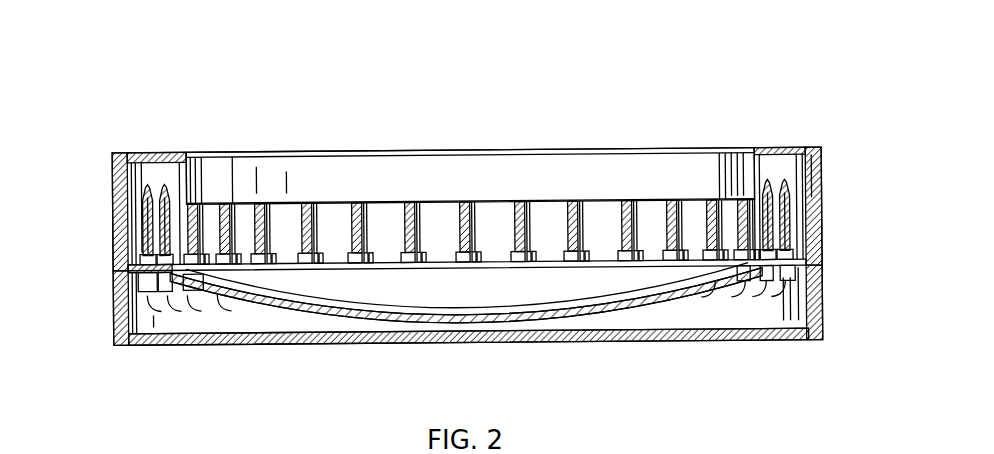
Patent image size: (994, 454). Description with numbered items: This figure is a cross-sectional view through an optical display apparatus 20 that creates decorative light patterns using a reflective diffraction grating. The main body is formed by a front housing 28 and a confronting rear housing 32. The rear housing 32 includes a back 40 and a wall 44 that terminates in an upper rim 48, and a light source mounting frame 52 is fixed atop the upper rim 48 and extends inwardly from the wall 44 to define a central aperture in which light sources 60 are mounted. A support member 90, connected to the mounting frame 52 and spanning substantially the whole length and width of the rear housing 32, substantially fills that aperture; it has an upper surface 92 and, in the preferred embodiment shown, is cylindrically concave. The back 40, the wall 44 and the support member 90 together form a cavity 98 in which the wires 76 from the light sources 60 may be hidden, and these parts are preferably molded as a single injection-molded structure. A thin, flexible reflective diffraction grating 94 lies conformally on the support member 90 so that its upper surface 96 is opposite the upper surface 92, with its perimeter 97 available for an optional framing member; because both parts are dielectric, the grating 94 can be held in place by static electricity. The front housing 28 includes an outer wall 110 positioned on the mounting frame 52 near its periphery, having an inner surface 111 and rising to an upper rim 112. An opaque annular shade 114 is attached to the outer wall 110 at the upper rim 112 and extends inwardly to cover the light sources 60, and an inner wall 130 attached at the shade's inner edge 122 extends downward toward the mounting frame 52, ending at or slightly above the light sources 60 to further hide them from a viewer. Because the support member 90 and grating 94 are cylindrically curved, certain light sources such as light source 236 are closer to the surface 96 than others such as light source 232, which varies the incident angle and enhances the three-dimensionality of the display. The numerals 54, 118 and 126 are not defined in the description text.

The optical display apparatus 20 is at (473, 78).
The front housing 28 is at (108, 178).
The rear housing 32 is at (108, 323).
The back 40 is at (678, 343).
The wall 44 is at (822, 324).
The upper rim 48 is at (815, 262).
The light source mounting frame 52 is at (128, 266).
The contact tail 54 is at (199, 295).
The light sources 60 is at (795, 212).
The wires 76 is at (167, 300).
The support member 90 is at (273, 304).
The upper surface 92 is at (333, 295).
The reflective diffraction grating 94 is at (405, 313).
The upper surface 96 is at (470, 306).
The perimeter 97 is at (745, 275).
The cavity 98 is at (618, 320).
The outer wall 110 is at (815, 168).
The inner surface 111 is at (806, 188).
The upper rim 112 is at (798, 148).
The annular shade 114 is at (792, 148).
The end portion 118 is at (763, 157).
The inner edge 122 is at (735, 149).
The end wall top 126 is at (812, 148).
The inner wall 130 is at (752, 174).
The light source 232 is at (520, 207).
The light source 236 is at (190, 203).